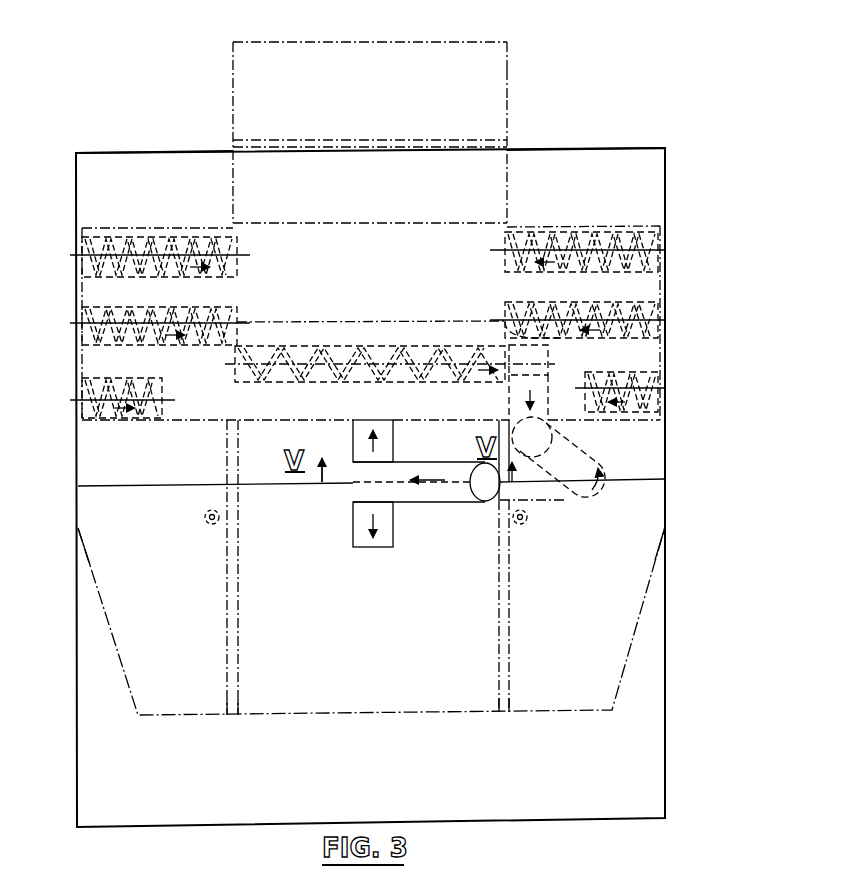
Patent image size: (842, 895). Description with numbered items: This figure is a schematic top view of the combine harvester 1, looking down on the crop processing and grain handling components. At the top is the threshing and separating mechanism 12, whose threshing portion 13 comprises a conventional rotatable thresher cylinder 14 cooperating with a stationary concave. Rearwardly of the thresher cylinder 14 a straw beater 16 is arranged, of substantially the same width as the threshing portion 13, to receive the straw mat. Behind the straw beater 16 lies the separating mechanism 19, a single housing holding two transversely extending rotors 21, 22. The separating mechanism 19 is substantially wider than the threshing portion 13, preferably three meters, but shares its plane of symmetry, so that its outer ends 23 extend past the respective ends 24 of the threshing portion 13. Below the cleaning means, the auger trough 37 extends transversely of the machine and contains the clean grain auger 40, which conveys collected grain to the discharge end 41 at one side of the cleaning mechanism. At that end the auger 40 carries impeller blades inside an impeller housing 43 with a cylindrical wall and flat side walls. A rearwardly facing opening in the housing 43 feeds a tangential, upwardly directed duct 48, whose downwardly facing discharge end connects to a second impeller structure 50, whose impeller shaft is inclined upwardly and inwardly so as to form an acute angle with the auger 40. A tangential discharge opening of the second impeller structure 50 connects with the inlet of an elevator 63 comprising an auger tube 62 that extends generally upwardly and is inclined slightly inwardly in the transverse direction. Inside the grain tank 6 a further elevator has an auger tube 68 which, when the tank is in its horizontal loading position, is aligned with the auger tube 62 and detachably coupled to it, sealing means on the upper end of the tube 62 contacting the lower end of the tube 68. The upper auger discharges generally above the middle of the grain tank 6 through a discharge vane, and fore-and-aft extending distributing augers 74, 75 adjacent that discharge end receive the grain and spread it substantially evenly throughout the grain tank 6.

The combine harvester 1 is at (610, 142).
The grain tank 6 is at (667, 662).
The threshing and separating mechanism 12 is at (519, 98).
The threshing portion 13 is at (510, 64).
The thresher cylinder 14 is at (444, 42).
The straw beater 16 is at (507, 147).
The separating mechanism 19 is at (669, 221).
The rotor 21 is at (663, 278).
The rotor 22 is at (665, 360).
The outer ends of the separating mechanism 23 is at (78, 283).
The ends of the threshing mechanism 24 is at (233, 105).
The auger trough 37 is at (260, 382).
The clean grain auger 40 is at (313, 382).
The discharge end 41 is at (500, 348).
The impeller housing 43 is at (549, 350).
The duct 48 is at (552, 400).
The second impeller structure 50 is at (554, 430).
The auger tube 62 is at (563, 500).
The elevator 63 is at (543, 504).
The auger tube 68 is at (466, 503).
The distributing auger 74 is at (393, 530).
The distributing auger 75 is at (393, 442).